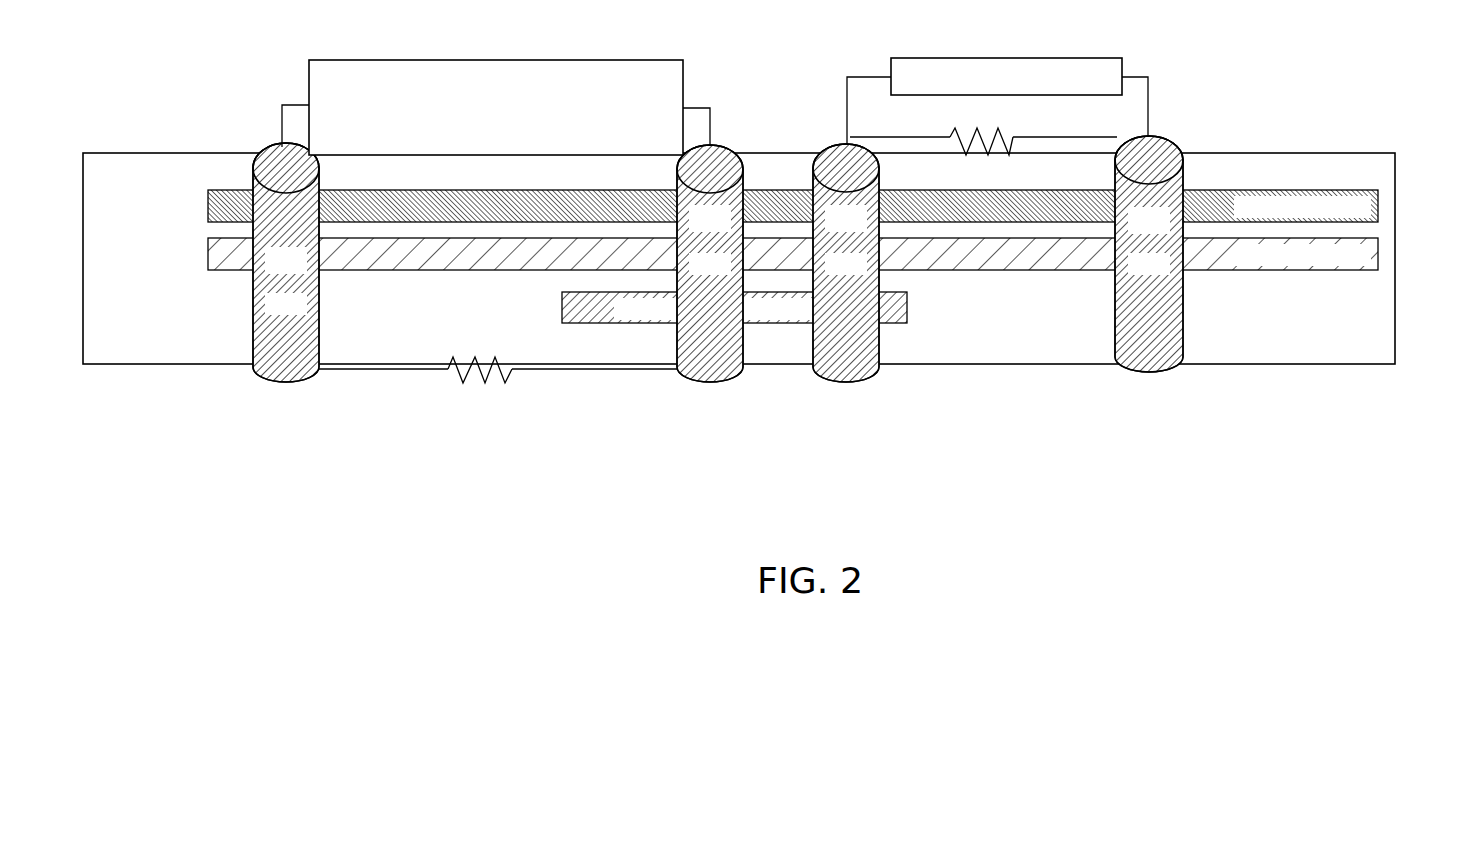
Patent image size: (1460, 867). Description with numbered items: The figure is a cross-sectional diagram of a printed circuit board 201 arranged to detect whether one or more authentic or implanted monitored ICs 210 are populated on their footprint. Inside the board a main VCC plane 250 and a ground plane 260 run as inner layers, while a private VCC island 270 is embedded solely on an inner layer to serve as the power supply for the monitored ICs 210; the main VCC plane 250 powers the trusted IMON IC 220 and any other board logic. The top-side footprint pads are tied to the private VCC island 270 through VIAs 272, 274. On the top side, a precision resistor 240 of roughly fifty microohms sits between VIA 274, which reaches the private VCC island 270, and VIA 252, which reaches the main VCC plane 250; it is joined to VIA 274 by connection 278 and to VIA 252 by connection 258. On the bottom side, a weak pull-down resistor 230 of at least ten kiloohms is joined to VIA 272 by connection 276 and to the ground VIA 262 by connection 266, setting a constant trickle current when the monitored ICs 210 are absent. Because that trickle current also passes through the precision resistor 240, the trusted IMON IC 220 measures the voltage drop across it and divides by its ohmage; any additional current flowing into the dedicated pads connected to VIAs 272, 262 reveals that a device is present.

The printed circuit board 201 is at (148, 153).
The authentic or implanted monitored IC 210 is at (375, 60).
The trusted IMON IC 220 is at (958, 58).
The weak pull-down resistor 230 is at (485, 386).
The precision resistor 240 is at (987, 157).
The main VCC plane 250 is at (1380, 203).
The VIA 252 is at (1131, 232).
The connection 258 is at (1078, 137).
The ground plane 260 is at (1380, 252).
The VIA 262 is at (268, 272).
The connection 266 is at (363, 372).
The private VCC island 270 is at (908, 303).
The VIA 272 is at (692, 230).
The VIA 274 is at (828, 230).
The connection 276 is at (613, 372).
The connection 278 is at (916, 137).